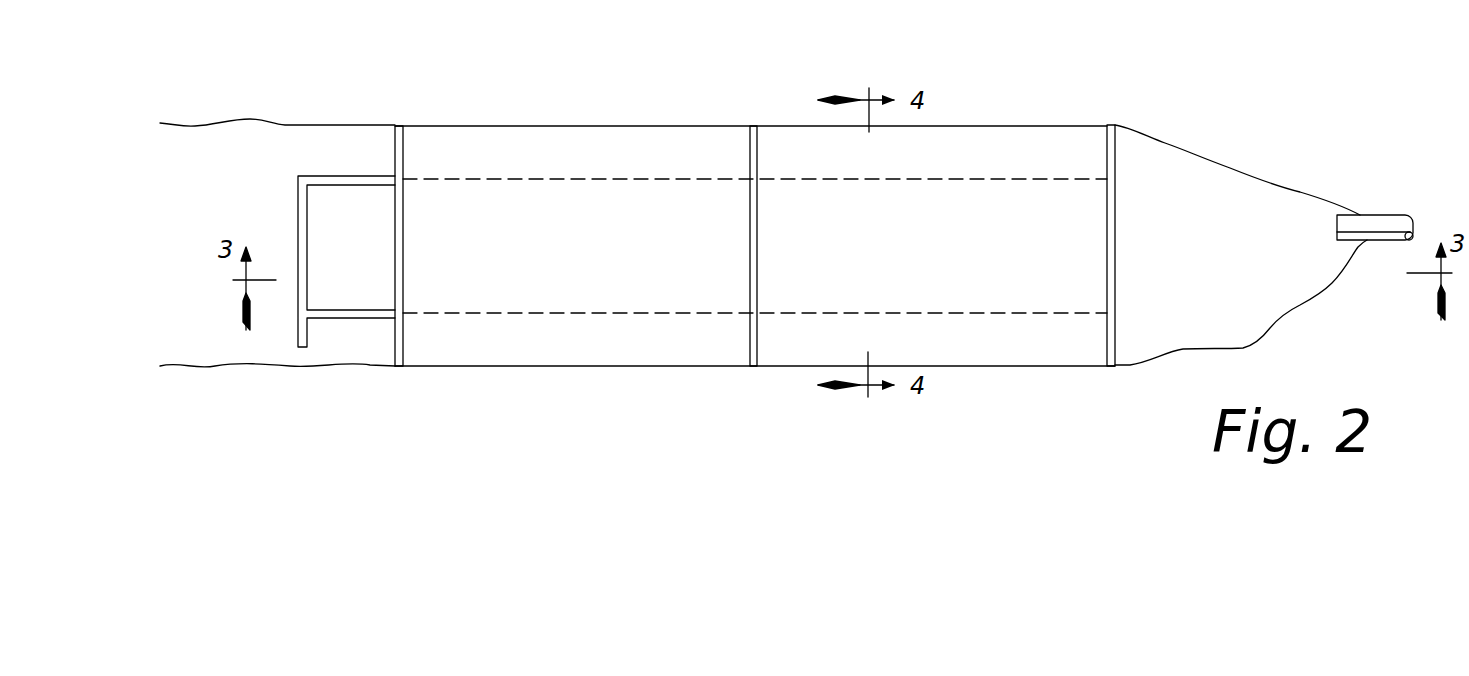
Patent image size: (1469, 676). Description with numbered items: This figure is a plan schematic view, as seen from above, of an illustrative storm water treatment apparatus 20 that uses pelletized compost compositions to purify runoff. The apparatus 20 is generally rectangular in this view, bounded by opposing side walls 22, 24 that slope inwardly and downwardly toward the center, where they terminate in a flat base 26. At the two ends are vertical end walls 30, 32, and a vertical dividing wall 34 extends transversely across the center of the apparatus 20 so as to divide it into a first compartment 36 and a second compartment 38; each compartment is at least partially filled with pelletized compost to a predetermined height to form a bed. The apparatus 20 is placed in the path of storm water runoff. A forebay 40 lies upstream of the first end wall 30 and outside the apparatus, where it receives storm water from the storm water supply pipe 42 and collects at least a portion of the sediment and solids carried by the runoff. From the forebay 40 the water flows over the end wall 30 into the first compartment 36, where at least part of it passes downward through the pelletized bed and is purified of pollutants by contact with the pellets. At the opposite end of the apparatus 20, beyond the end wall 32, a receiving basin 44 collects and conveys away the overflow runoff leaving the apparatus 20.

The storm water treatment apparatus 20 is at (985, 86).
The side wall 22 is at (677, 123).
The side wall 24 is at (630, 371).
The flat base 26 is at (1018, 201).
The first end wall 30 is at (1115, 246).
The end wall 32 is at (395, 155).
The dividing wall 34 is at (757, 348).
The first compartment 36 is at (834, 216).
The second compartment 38 is at (554, 198).
The forebay 40 is at (1194, 197).
The storm water supply pipe 42 is at (1373, 226).
The receiving basin 44 is at (337, 178).